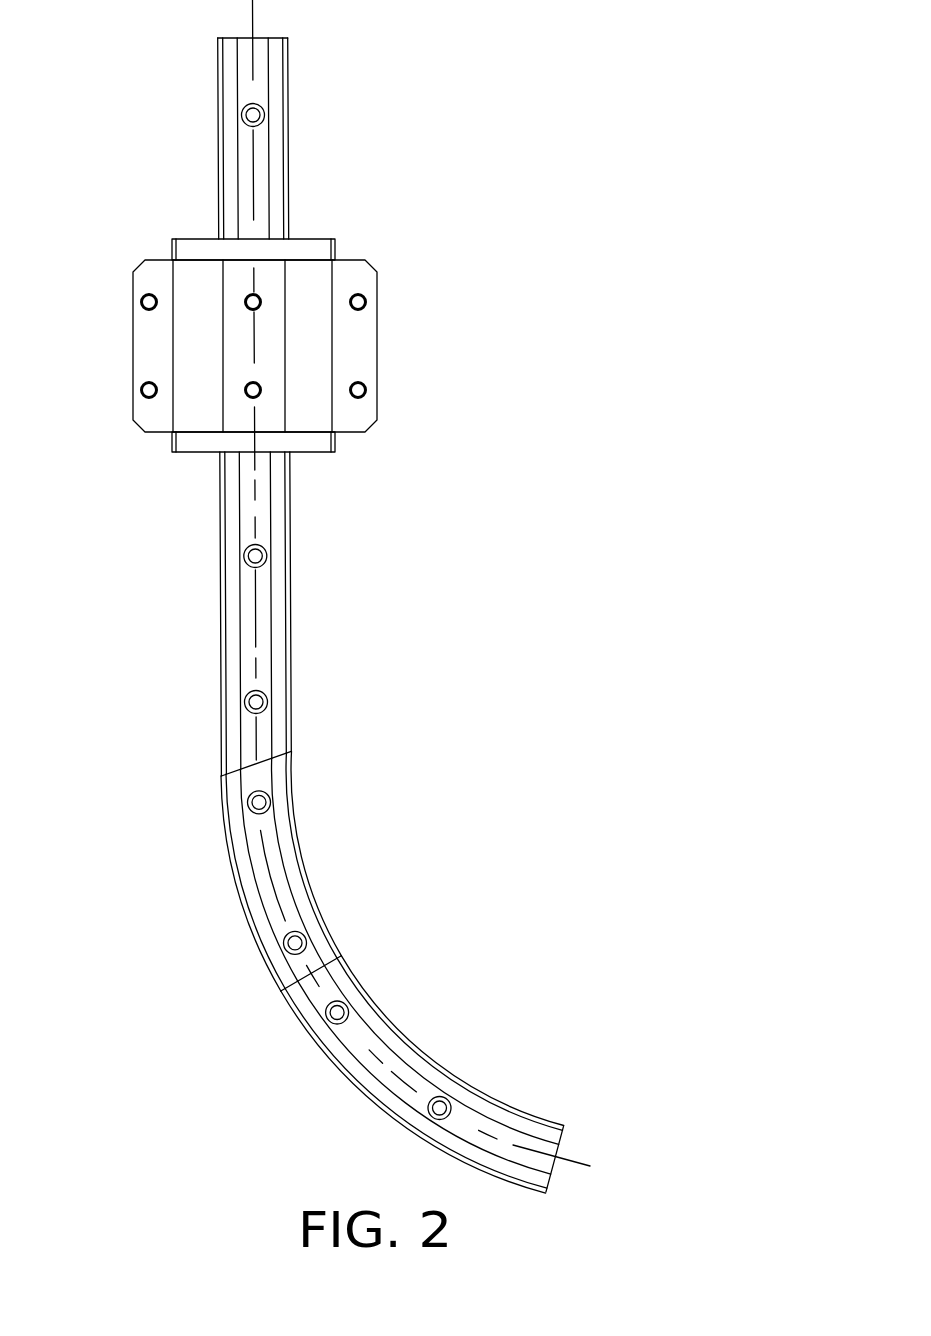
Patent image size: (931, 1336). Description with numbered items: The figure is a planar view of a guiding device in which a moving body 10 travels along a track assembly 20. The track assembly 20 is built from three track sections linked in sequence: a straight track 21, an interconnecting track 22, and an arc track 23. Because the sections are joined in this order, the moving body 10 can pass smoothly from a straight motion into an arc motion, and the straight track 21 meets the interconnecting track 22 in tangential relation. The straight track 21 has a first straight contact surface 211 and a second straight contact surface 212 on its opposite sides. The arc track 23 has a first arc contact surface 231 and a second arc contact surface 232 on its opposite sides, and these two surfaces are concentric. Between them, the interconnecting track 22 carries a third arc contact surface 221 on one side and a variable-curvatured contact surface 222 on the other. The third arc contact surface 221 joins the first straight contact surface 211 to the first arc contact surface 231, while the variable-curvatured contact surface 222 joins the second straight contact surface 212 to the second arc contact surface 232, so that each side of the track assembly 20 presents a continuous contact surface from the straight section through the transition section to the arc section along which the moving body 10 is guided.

The moving body 10 is at (285, 345).
The track assembly 20 is at (433, 596).
The straight track 21 is at (341, 388).
The first straight contact surface 211 is at (222, 617).
The second straight contact surface 212 is at (292, 600).
The interconnecting track 22 is at (358, 869).
The third arc contact surface 221 is at (236, 882).
The variable-curvatured contact surface 222 is at (300, 830).
The arc track 23 is at (426, 1038).
The first arc contact surface 231 is at (393, 1117).
The second arc contact surface 232 is at (442, 1063).